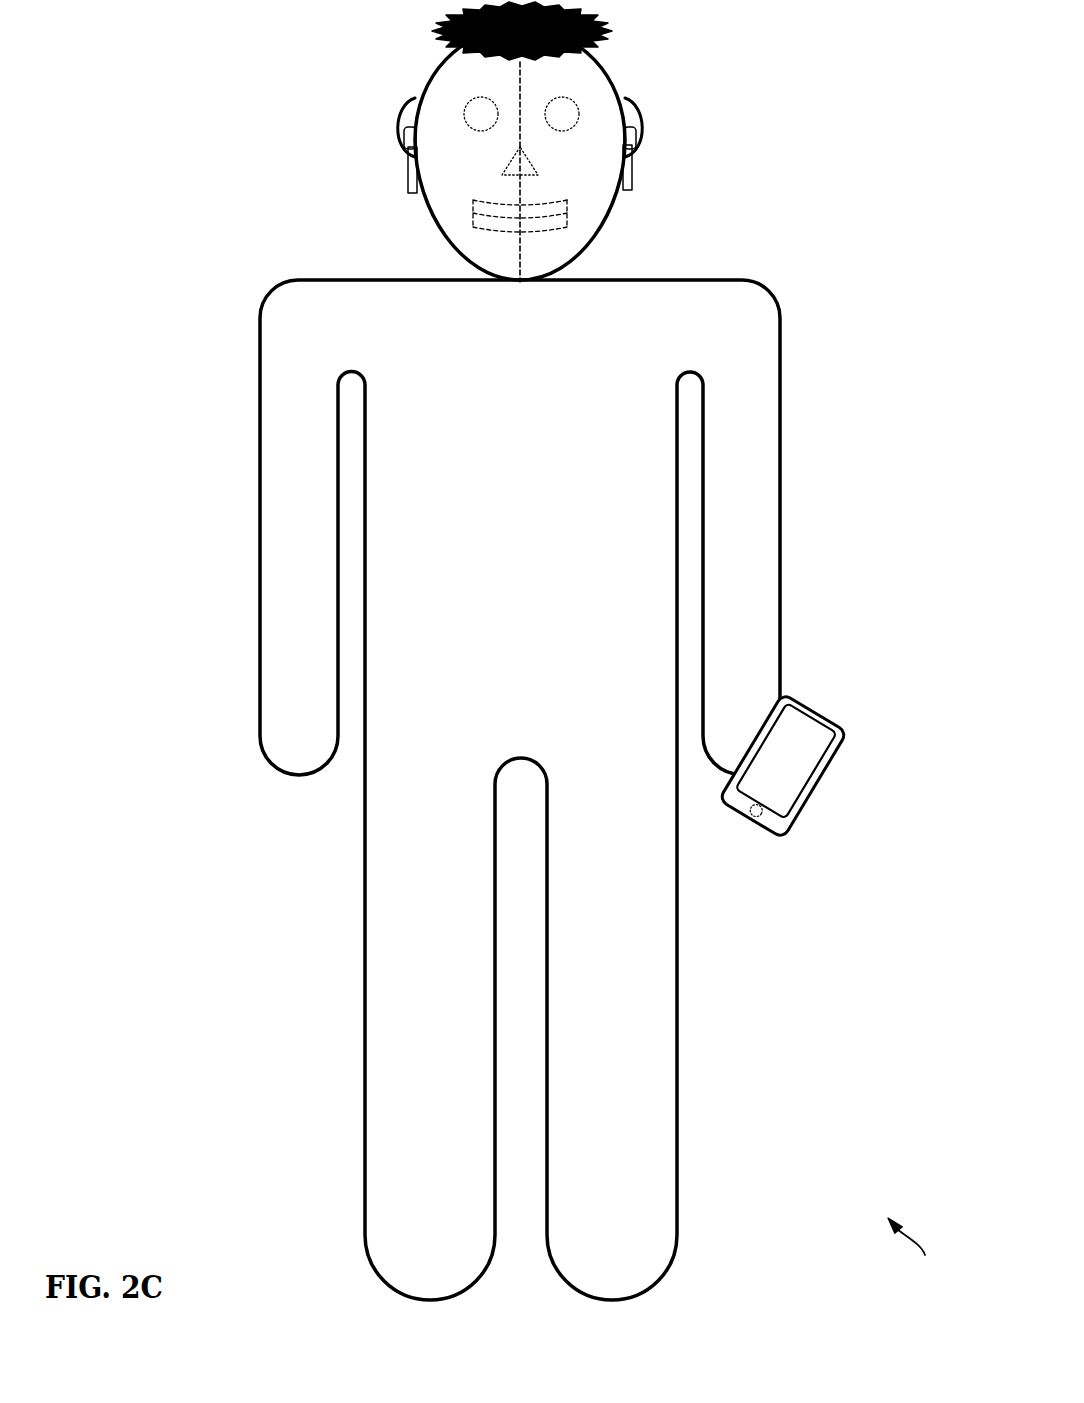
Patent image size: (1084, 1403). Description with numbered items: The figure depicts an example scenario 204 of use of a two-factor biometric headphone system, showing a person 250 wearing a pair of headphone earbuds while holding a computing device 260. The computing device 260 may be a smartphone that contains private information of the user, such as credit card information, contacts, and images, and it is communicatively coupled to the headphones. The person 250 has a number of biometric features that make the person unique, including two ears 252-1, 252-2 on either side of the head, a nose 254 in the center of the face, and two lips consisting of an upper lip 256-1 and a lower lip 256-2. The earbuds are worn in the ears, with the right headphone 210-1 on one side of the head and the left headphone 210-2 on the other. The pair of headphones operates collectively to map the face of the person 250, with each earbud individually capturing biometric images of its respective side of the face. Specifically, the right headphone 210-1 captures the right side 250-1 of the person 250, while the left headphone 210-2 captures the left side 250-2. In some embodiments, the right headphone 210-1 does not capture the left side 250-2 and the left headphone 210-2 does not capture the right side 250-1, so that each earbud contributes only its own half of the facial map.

The example scenario 204 is at (924, 1255).
The person 250 is at (760, 330).
The right side of person 250-1 is at (445, 63).
The left side of person 250-2 is at (590, 62).
The ear 252-1 is at (408, 110).
The ear 252-2 is at (627, 110).
The right headphone 210-1 is at (408, 173).
The left headphone 210-2 is at (630, 163).
The nose 254 is at (528, 163).
The upper lip 256-1 is at (562, 210).
The lower lip 256-2 is at (487, 222).
The computing device 260 is at (800, 765).